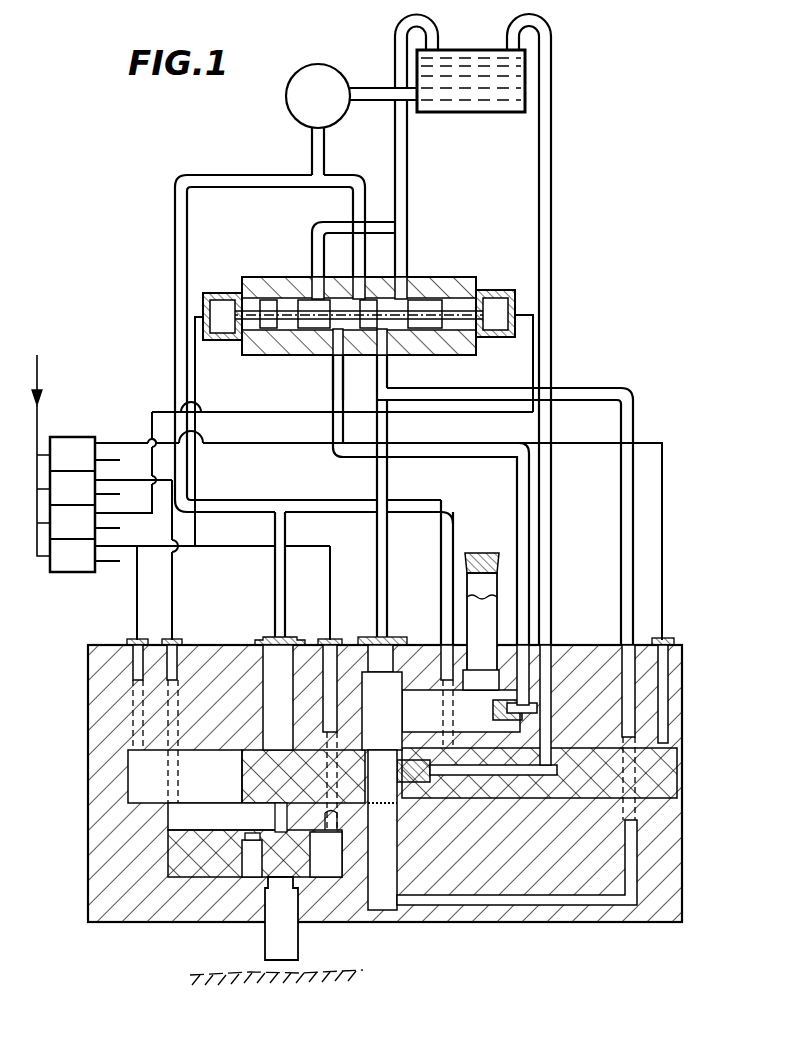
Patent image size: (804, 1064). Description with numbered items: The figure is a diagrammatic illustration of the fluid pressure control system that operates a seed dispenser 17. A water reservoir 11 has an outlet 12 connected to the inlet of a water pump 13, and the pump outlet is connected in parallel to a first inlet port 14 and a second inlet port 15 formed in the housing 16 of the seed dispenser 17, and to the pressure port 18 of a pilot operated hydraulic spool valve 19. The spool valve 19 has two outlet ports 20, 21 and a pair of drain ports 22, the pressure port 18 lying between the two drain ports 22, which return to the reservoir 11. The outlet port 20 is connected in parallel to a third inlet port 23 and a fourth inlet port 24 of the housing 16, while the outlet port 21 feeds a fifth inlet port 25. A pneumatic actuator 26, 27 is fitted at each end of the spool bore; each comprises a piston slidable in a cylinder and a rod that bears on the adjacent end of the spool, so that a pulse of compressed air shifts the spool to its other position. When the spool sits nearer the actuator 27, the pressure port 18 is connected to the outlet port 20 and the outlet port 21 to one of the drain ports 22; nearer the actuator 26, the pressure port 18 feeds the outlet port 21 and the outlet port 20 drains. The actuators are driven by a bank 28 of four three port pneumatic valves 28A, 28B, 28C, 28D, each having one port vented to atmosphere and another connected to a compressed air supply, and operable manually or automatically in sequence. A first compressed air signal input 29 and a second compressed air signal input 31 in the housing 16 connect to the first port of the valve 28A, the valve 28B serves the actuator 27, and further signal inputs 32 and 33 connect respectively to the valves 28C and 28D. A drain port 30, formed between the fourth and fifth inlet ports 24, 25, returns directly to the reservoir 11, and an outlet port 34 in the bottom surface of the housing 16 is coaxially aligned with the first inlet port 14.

The water reservoir 11 is at (492, 113).
The outlet 12 is at (415, 108).
The water pump 13 is at (306, 109).
The first inlet port 14 is at (267, 638).
The second inlet port 15 is at (438, 655).
The housing 16 is at (88, 692).
The seed dispenser 17 is at (165, 927).
The pressure port 18 is at (380, 277).
The pilot operated hydraulic spool valve 19 is at (359, 290).
The outlet port 20 is at (330, 357).
The outlet port 21 is at (393, 357).
The drain ports 22 is at (305, 277).
The third inlet port 23 is at (371, 637).
The fourth inlet port 24 is at (514, 640).
The fifth inlet port 25 is at (614, 645).
The pneumatic actuator 26 is at (220, 340).
The pneumatic actuator 27 is at (492, 338).
The bank of four three port pneumatic valves 28 is at (282, 463).
The three port pneumatic valve 28A is at (91, 569).
The three port pneumatic valve 28B is at (91, 536).
The three port pneumatic valve 28C is at (91, 502).
The three port pneumatic valve 28D is at (91, 468).
The first compressed air signal input 29 is at (130, 647).
The drain port 30 is at (567, 655).
The second compressed air signal input 31 is at (322, 646).
The compressed air signal input 32 is at (184, 646).
The fourth compressed air signal input 33 is at (665, 644).
The outlet port 34 is at (265, 945).